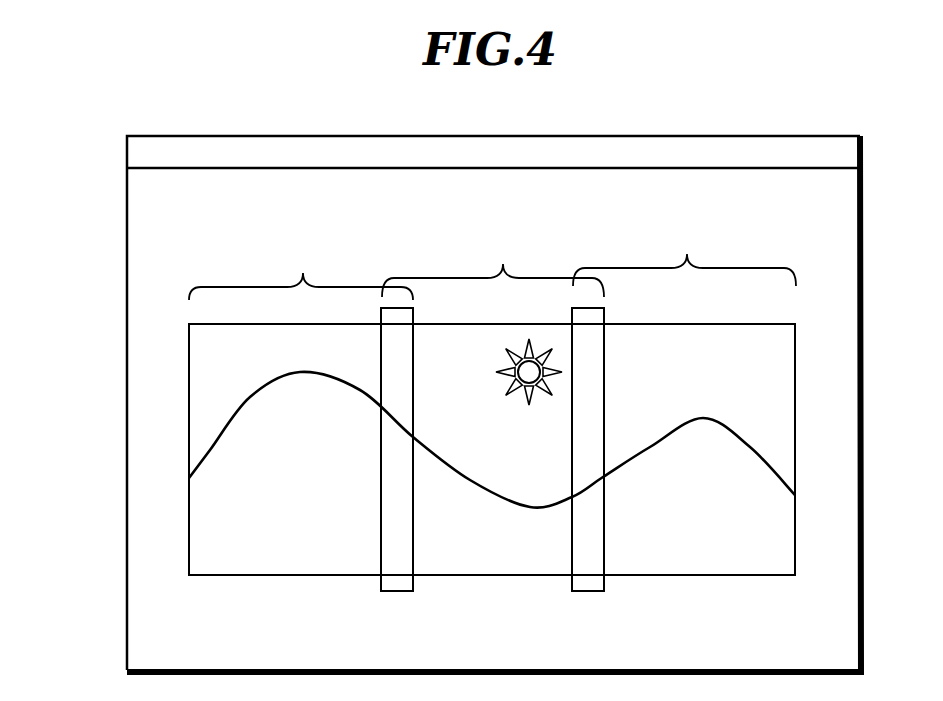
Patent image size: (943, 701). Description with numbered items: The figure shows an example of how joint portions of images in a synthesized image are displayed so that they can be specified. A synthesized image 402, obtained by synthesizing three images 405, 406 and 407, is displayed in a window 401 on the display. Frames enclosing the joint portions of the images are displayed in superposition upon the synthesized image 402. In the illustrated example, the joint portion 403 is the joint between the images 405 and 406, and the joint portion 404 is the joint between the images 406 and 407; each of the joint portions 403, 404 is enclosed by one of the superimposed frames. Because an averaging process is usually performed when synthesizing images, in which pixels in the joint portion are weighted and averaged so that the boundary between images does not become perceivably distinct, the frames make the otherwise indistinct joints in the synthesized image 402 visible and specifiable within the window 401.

The window 401 is at (127, 420).
The synthesized image 402 is at (283, 578).
The joint portion 403 is at (396, 592).
The joint portion 404 is at (587, 592).
The image 405 is at (303, 273).
The image 406 is at (503, 264).
The image 407 is at (687, 254).